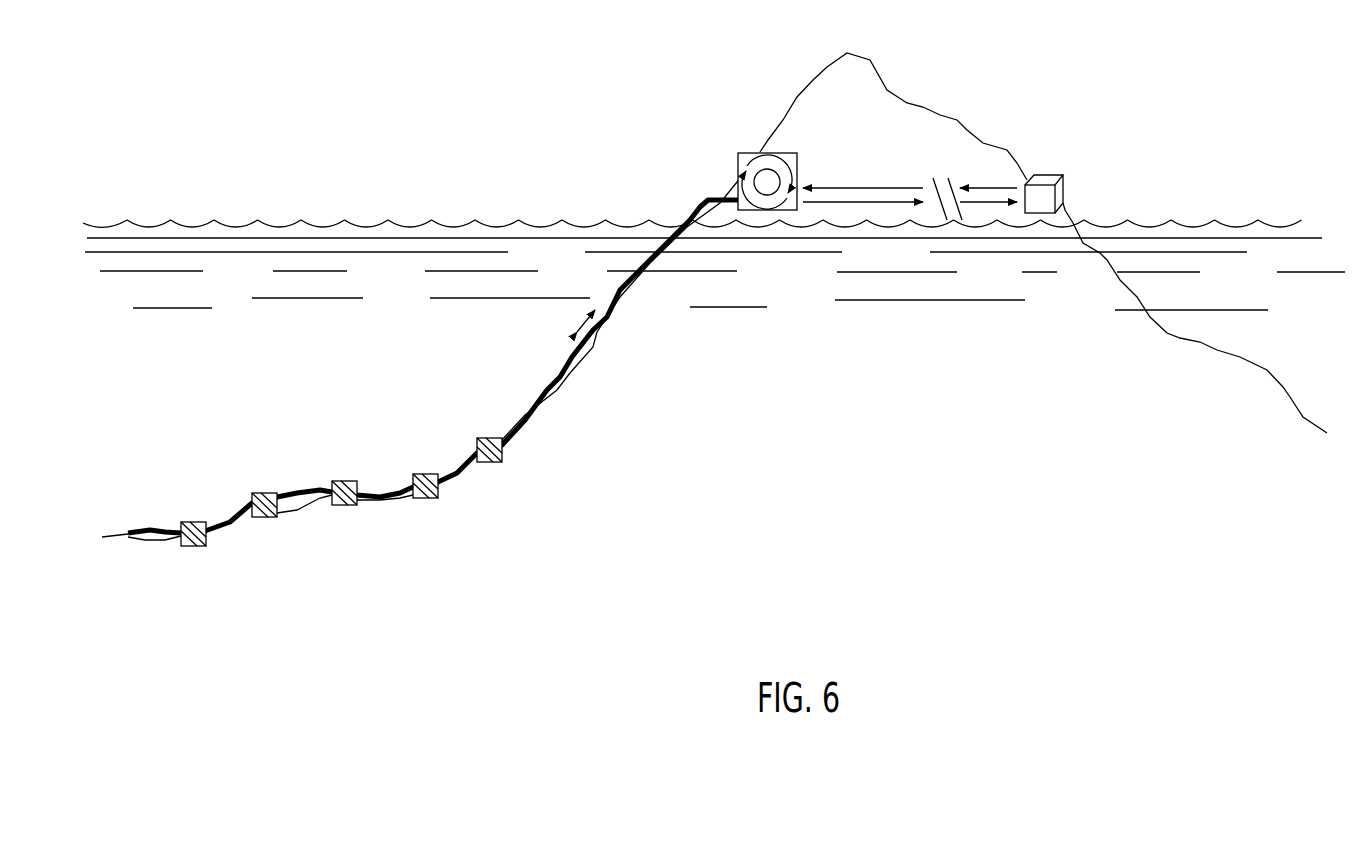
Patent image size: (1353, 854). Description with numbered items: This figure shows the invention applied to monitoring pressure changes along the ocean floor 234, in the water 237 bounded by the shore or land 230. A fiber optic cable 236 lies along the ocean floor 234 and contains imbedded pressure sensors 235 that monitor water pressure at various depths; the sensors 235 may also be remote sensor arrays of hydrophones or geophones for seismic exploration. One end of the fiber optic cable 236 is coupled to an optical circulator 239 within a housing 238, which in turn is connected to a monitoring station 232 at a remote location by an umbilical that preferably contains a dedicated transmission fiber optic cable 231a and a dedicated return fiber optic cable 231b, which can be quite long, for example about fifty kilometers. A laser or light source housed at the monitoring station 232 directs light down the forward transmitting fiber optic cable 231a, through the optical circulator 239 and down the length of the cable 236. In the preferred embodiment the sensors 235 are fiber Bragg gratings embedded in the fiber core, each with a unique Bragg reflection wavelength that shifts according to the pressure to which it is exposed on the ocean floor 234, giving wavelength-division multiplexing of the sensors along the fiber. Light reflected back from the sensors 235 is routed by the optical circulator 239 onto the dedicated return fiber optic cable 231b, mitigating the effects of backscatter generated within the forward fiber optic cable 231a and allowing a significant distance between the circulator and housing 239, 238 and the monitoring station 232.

The land / shore 230 is at (913, 103).
The dedicated transmission fiber optic cable 231a is at (992, 188).
The dedicated return fiber optic cable 231b is at (1000, 196).
The monitoring station 232 is at (1043, 178).
The ocean floor 234 is at (298, 512).
The pressure sensors 235 is at (480, 438).
The fiber optic cable 236 is at (563, 368).
The water 237 is at (280, 349).
The housing 238 is at (732, 140).
The optical circulator 239 is at (768, 172).